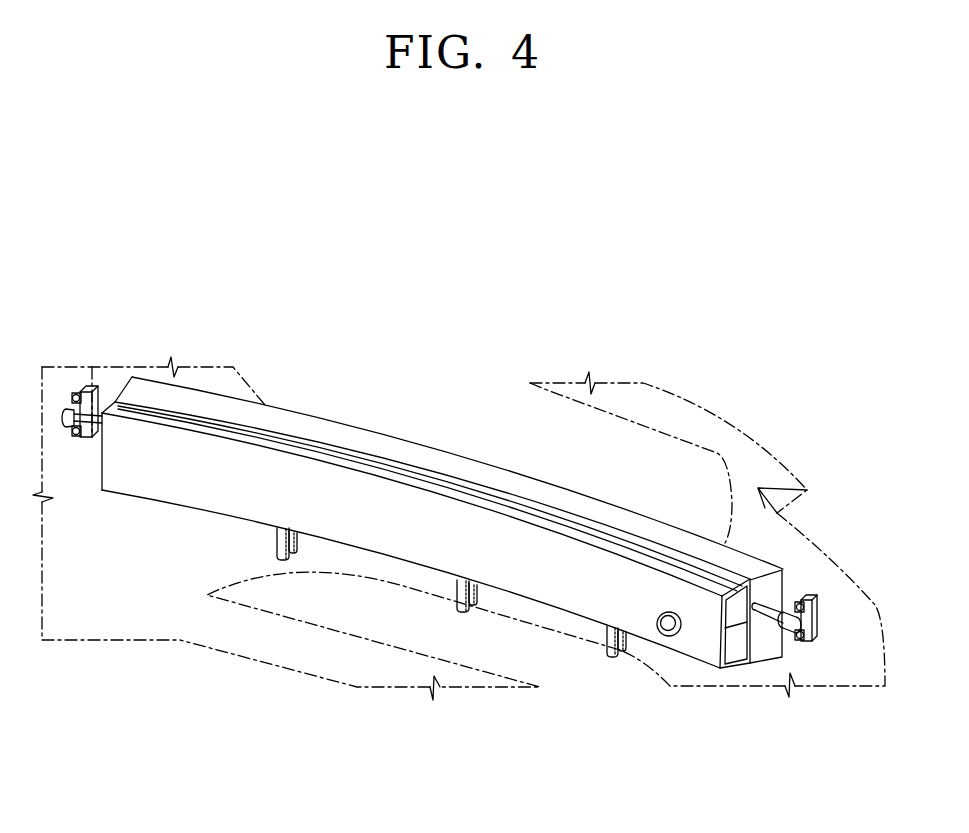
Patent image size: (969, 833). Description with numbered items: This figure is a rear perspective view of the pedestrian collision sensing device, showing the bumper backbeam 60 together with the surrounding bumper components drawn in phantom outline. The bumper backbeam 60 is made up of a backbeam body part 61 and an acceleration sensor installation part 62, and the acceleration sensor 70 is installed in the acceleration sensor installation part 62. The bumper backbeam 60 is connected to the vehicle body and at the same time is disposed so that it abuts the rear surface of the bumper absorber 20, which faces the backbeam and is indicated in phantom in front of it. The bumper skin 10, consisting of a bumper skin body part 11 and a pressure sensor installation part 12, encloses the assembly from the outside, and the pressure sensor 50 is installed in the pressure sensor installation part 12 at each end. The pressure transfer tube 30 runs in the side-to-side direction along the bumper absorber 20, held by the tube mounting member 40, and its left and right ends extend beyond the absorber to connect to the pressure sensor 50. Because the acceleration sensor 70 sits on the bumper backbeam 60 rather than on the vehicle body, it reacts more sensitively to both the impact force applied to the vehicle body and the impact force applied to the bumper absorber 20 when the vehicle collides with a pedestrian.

The bumper skin 10 is at (698, 407).
The bumper skin body part 11 is at (160, 613).
The pressure sensor installation part 12 is at (90, 392).
The bumper absorber 20 is at (747, 560).
The pressure transfer tube 30 is at (82, 432).
The tube mounting member 40 is at (780, 577).
The pressure sensor 50 is at (70, 403).
The bumper backbeam 60 is at (457, 498).
The backbeam body part 61 is at (392, 515).
The acceleration sensor installation part 62 is at (628, 653).
The acceleration sensor 70 is at (607, 657).